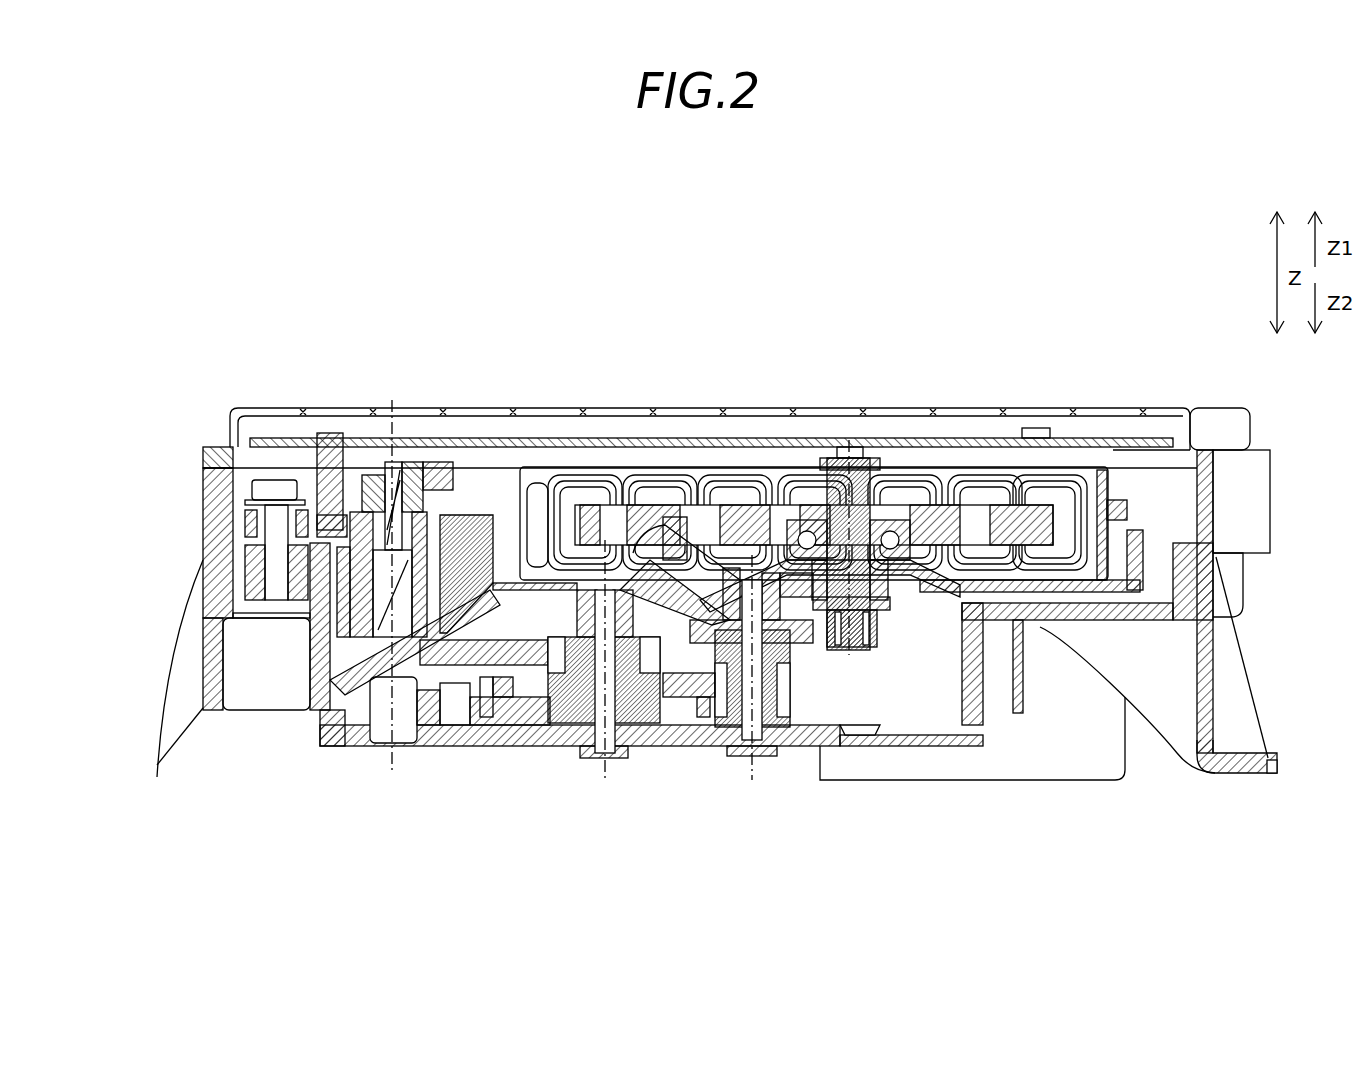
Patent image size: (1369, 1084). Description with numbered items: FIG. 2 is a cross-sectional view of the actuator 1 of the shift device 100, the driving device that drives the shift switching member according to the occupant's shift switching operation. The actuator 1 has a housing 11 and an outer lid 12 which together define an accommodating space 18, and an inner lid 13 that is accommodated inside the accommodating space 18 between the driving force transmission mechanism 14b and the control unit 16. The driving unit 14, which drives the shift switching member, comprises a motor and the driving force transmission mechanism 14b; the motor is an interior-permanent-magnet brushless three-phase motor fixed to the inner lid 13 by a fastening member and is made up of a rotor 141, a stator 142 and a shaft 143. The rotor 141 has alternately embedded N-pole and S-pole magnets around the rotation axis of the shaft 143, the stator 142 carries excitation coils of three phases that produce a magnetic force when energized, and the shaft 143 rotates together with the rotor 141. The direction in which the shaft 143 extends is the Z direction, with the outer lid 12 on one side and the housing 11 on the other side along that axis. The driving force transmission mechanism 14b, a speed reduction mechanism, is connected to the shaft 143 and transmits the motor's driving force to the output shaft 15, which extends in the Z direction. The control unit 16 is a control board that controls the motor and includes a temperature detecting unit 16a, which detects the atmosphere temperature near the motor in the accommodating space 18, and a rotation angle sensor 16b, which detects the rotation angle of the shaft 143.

The shift device 100 is at (108, 272).
The actuator 1 is at (172, 444).
The housing 11 is at (785, 740).
The outer lid 12 is at (686, 408).
The inner lid 13 is at (1168, 450).
The driving unit 14 is at (782, 458).
The driving force transmission mechanism 14b is at (803, 706).
The rotor 141 is at (645, 490).
The stator 142 is at (582, 490).
The shaft 143 is at (887, 607).
The output shaft 15 is at (392, 455).
The control unit 16 is at (730, 430).
The temperature detecting unit 16a is at (1038, 428).
The rotation angle sensor 16b is at (835, 450).
The accommodating space 18 is at (518, 425).